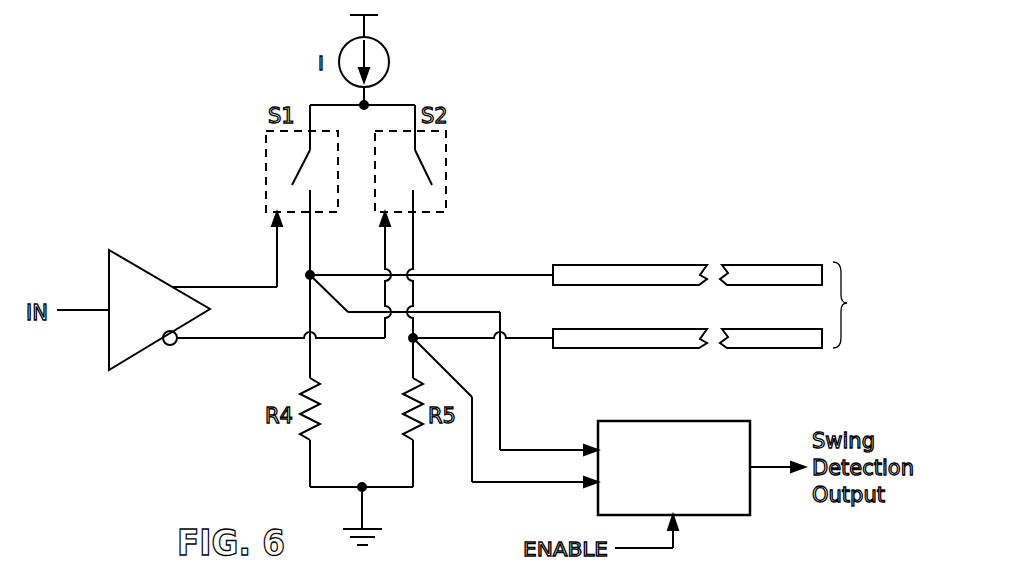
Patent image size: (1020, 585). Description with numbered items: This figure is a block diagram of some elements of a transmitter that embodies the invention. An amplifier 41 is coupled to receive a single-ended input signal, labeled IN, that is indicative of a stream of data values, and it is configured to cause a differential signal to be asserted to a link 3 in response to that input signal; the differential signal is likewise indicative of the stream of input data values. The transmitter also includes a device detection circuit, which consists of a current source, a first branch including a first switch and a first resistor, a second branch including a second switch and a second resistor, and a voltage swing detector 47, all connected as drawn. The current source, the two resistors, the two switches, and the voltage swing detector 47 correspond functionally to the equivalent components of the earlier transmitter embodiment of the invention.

The amplifier 41 is at (109, 281).
The link 3 is at (847, 305).
The voltage swing detector 47 is at (665, 421).